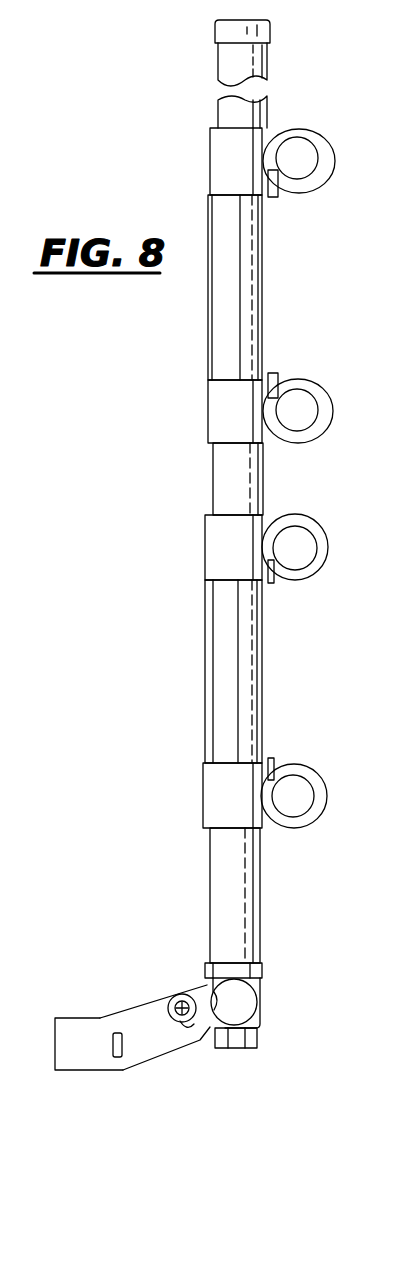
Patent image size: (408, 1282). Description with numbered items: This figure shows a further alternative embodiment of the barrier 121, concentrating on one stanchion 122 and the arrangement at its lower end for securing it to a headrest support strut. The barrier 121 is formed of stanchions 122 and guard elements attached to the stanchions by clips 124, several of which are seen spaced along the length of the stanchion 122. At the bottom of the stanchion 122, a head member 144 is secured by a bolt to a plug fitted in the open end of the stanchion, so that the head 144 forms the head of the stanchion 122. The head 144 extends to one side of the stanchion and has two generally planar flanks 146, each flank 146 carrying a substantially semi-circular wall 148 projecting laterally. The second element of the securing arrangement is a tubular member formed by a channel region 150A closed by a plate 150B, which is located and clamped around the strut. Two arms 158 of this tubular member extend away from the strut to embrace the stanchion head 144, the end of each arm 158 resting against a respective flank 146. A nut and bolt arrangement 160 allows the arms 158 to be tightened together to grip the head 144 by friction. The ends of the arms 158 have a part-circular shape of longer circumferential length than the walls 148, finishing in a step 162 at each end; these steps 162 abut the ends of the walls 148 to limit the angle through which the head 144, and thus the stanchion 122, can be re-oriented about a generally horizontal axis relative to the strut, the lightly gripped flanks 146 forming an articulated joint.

The barrier 121 is at (186, 601).
The stanchion 122 is at (233, 480).
The clip 124 is at (307, 574).
The head member 144 is at (237, 967).
The flank 146 is at (227, 980).
The semi-circular wall 148 is at (260, 1000).
The step 162 is at (234, 1002).
The arm 158 is at (140, 1018).
The nut and bolt arrangement 160 is at (178, 1000).
The channel region 150A is at (83, 1040).
The plate 150B is at (123, 1046).